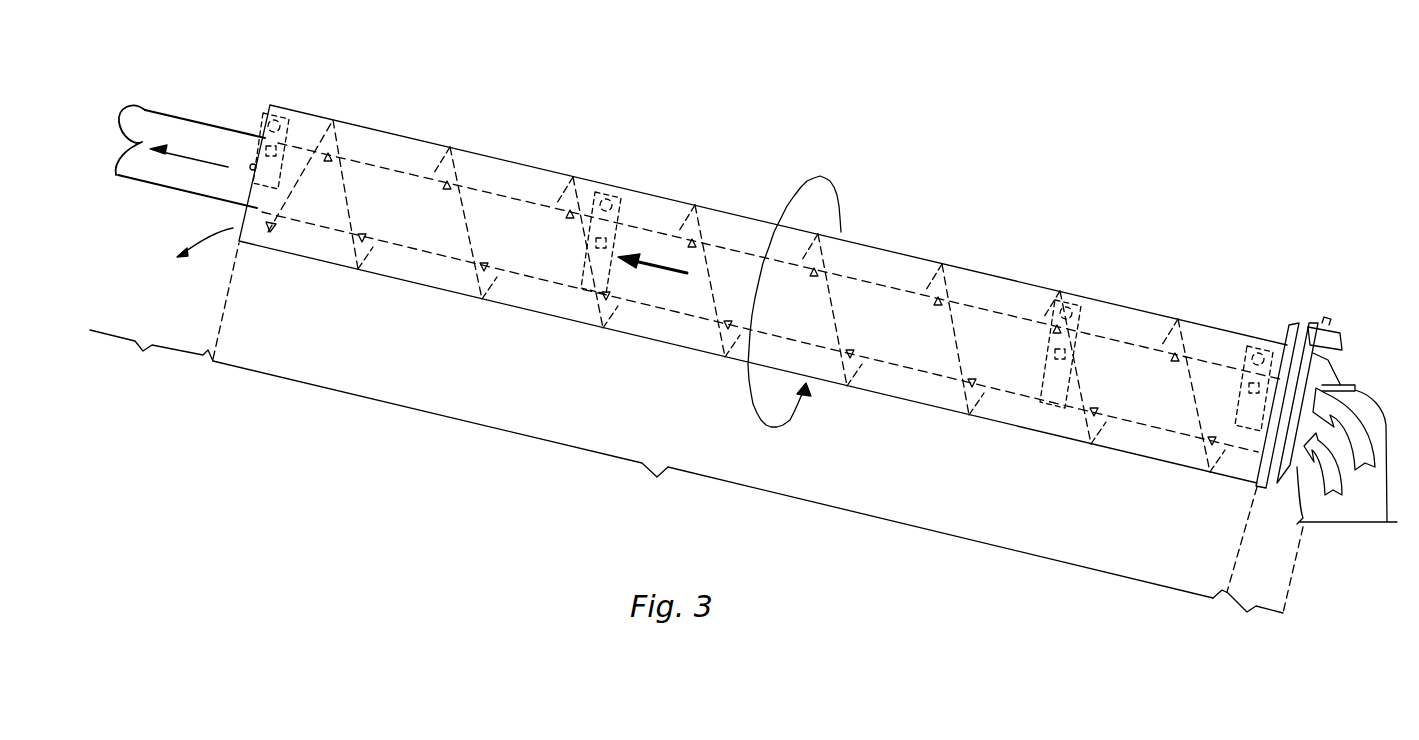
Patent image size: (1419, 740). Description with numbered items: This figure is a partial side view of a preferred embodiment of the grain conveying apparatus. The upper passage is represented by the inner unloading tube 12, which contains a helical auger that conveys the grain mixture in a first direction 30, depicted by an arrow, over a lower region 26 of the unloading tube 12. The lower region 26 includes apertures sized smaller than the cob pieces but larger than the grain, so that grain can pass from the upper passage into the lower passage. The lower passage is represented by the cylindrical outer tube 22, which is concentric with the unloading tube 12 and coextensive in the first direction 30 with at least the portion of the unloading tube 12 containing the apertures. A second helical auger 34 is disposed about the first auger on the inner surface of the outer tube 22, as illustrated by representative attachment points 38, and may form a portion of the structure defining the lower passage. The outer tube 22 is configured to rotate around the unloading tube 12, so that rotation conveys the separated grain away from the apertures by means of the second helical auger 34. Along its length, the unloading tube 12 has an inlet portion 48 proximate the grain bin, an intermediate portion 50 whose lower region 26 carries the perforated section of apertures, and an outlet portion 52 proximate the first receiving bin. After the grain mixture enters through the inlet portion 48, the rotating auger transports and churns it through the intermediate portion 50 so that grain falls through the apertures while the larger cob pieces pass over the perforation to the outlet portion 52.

The unloading tube 12 is at (210, 127).
The cylindrical outer tube 22 is at (430, 288).
The lower region 26 is at (866, 343).
The first direction 30 is at (660, 270).
The second helical auger 34 is at (458, 175).
The attachment points 38 is at (725, 358).
The inlet portion 48 is at (1305, 480).
The intermediate portion 50 is at (713, 479).
The outlet portion 52 is at (164, 310).